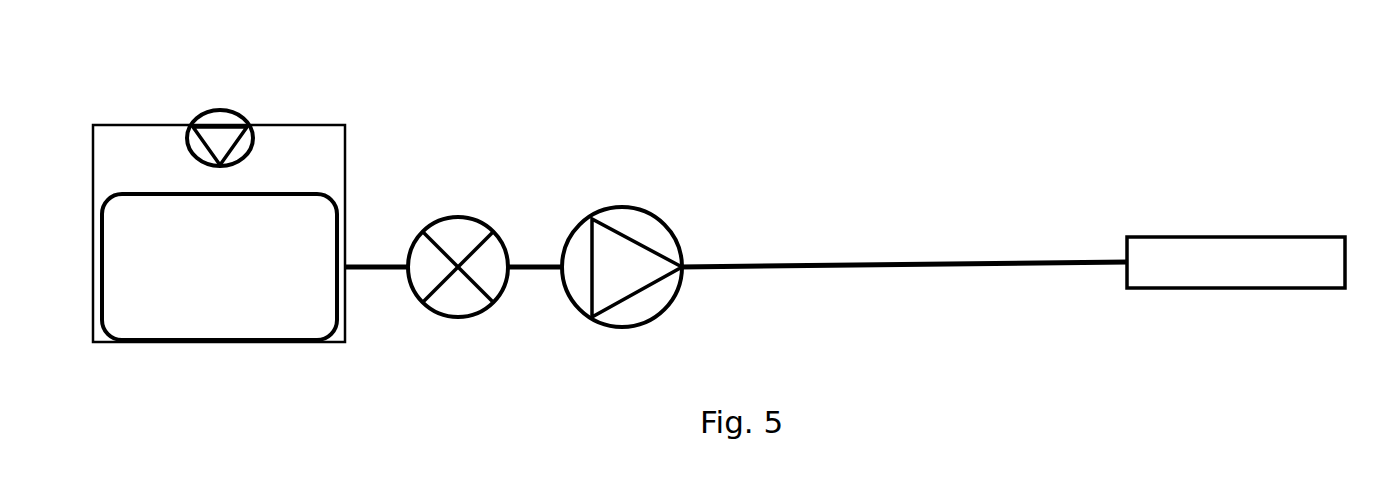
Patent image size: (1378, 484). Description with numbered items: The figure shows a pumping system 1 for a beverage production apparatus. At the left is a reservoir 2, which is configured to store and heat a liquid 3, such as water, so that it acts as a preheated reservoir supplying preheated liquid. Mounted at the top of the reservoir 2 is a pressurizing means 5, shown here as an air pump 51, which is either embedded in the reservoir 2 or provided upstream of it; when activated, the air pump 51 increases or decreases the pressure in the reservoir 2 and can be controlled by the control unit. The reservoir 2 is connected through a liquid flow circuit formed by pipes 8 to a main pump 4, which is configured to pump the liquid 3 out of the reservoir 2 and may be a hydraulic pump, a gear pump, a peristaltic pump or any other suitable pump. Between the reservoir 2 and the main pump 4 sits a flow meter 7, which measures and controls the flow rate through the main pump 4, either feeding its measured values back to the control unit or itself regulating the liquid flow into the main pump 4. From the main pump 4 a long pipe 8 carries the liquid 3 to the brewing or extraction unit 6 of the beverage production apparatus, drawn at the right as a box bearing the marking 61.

The pumping system 1 is at (852, 185).
The reservoir 2 is at (318, 122).
The liquid 3 is at (178, 321).
The main pump 4 is at (637, 228).
The pressurizing means 5 is at (205, 104).
The air pump 51 is at (223, 132).
The brewing or extraction unit 6 is at (1236, 212).
The outlet 61 is at (1236, 262).
The flow meter 7 is at (460, 238).
The pipes 8 is at (885, 273).